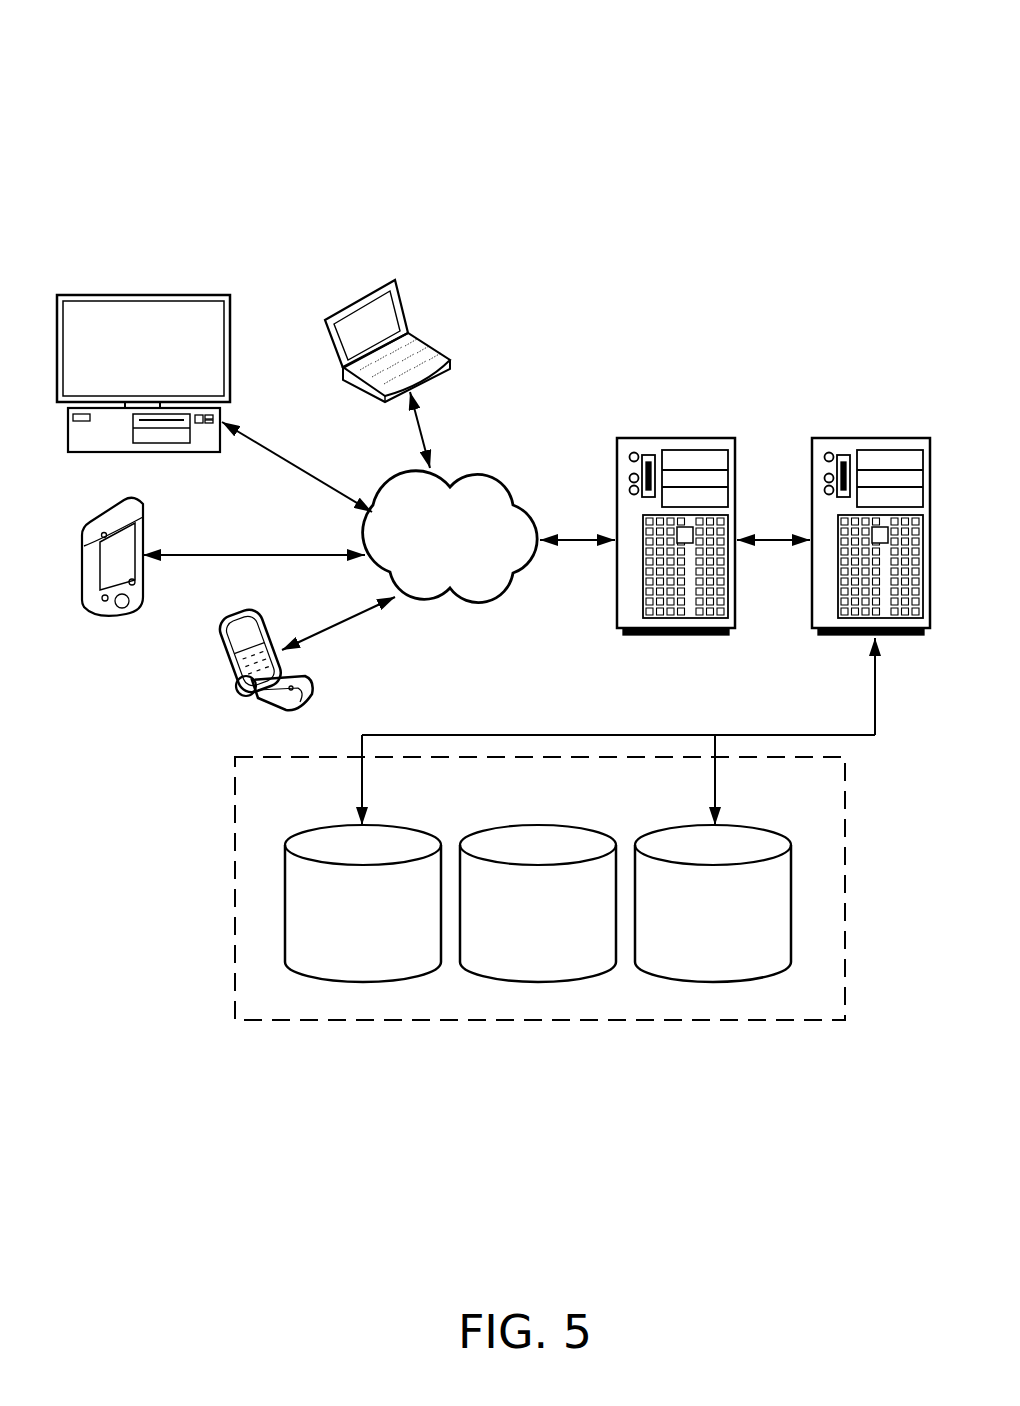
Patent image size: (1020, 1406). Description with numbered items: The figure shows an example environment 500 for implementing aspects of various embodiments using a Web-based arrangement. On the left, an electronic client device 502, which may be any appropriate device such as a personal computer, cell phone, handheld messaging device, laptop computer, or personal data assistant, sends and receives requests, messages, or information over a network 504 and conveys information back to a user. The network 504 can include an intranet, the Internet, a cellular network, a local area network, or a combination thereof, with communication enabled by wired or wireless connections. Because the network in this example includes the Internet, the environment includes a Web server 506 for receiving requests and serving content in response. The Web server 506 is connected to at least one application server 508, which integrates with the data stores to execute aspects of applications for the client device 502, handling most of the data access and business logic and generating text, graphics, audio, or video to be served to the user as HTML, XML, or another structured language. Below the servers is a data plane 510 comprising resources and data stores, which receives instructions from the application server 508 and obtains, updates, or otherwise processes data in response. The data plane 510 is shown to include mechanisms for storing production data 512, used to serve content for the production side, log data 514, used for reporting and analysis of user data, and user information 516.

The environment 500 is at (886, 88).
The electronic client device 502 is at (171, 283).
The network 504 is at (474, 472).
The Web server 506 is at (617, 607).
The application server 508 is at (812, 616).
The data plane / data store 510 is at (270, 1022).
The production data 512 is at (383, 981).
The log data 514 is at (555, 981).
The user information data store 516 is at (737, 981).